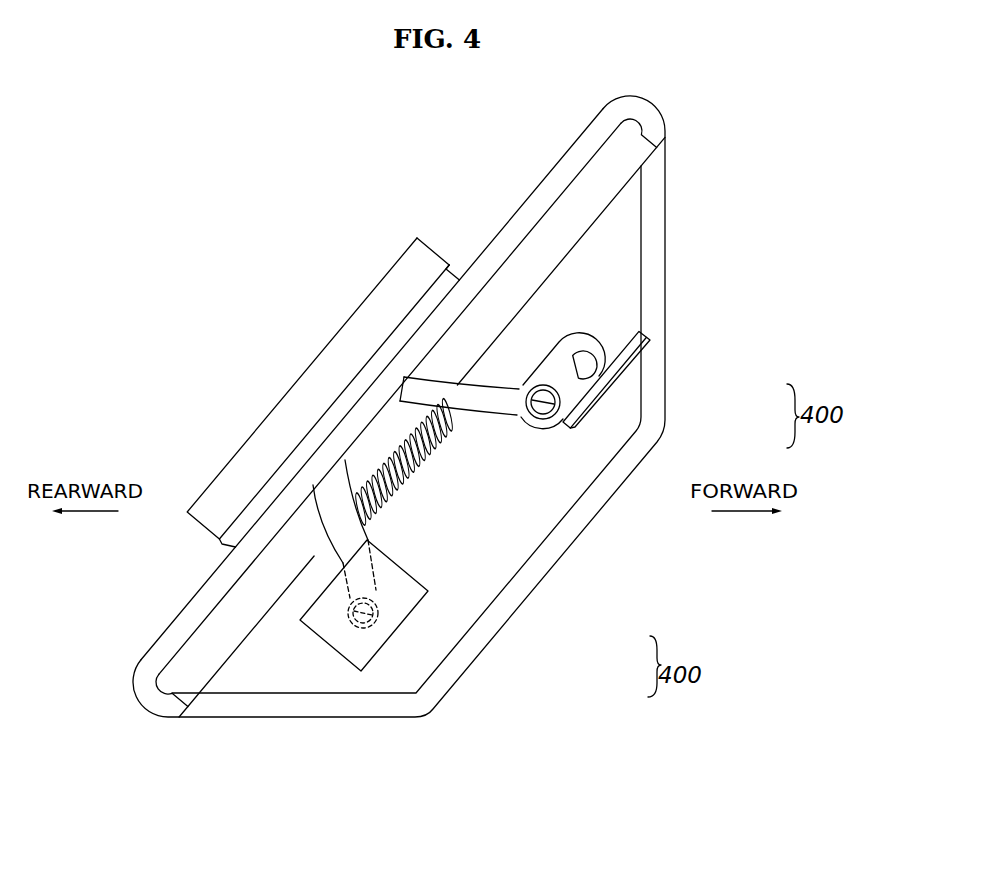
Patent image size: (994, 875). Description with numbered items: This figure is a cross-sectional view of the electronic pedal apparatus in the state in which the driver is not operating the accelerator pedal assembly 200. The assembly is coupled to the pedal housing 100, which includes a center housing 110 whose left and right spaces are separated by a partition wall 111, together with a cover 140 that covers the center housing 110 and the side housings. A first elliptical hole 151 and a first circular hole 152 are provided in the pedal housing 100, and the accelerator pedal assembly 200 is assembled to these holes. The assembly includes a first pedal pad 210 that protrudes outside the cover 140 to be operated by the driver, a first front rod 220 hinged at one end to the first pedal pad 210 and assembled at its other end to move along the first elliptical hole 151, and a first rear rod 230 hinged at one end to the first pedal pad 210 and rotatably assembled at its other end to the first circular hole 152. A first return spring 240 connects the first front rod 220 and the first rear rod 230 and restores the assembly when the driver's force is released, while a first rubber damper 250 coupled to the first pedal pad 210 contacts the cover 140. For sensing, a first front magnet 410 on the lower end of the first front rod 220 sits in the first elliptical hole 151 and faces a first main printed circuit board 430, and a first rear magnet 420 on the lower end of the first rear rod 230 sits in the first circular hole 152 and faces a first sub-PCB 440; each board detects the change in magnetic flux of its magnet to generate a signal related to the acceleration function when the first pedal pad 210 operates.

The pedal housing 100 is at (690, 173).
The center housing 110 is at (655, 297).
The partition wall 111 is at (620, 245).
The cover 140 is at (167, 647).
The first elliptical hole 151 is at (568, 340).
The first circular hole 152 is at (345, 628).
The accelerator pedal assembly 200 is at (379, 263).
The first pedal pad 210 is at (315, 397).
The first front rod 220 is at (428, 393).
The first rear rod 230 is at (347, 543).
The first return spring 240 is at (430, 443).
The first rubber damper 250 is at (267, 497).
The first front magnet 410 is at (547, 407).
The first rear magnet 420 is at (373, 620).
The first main printed circuit board 430 is at (608, 377).
The first sub-PCB 440 is at (393, 597).